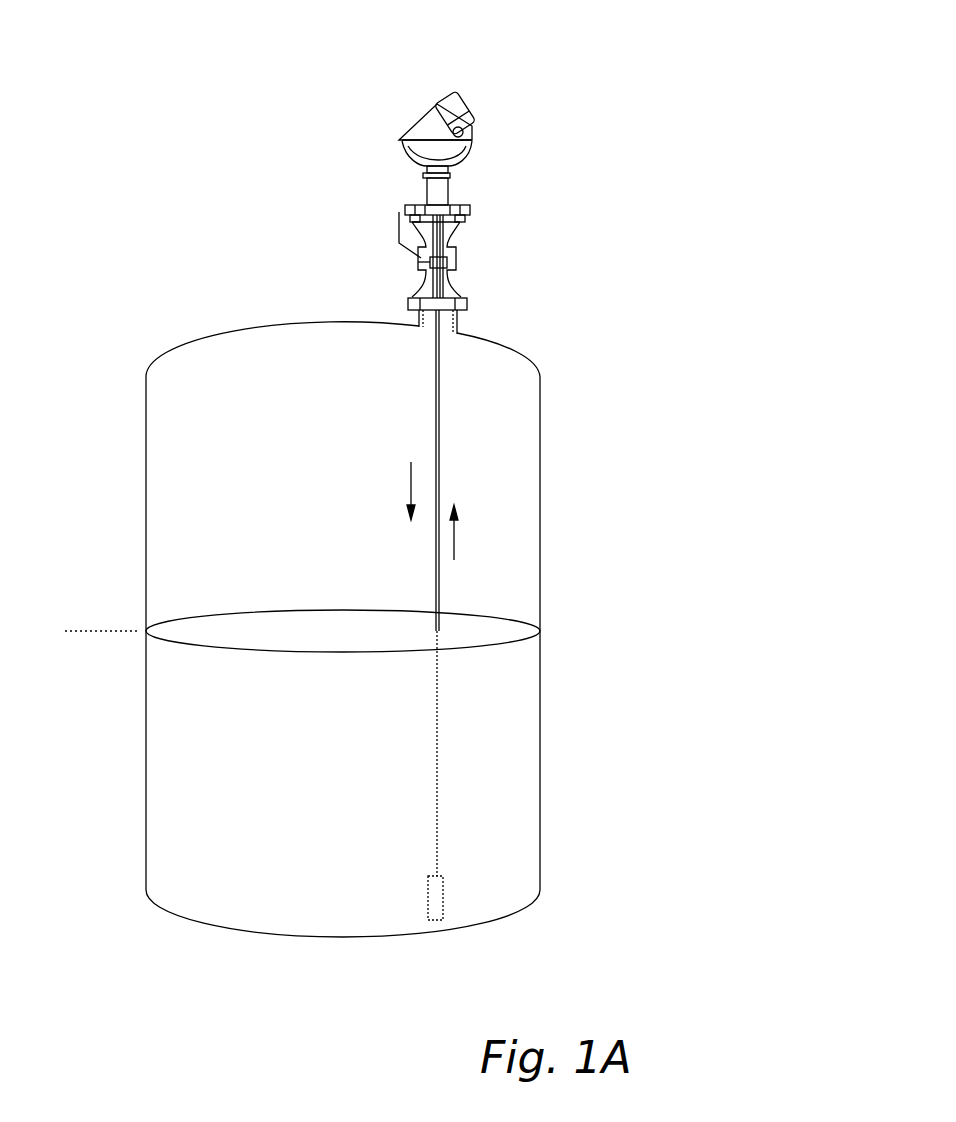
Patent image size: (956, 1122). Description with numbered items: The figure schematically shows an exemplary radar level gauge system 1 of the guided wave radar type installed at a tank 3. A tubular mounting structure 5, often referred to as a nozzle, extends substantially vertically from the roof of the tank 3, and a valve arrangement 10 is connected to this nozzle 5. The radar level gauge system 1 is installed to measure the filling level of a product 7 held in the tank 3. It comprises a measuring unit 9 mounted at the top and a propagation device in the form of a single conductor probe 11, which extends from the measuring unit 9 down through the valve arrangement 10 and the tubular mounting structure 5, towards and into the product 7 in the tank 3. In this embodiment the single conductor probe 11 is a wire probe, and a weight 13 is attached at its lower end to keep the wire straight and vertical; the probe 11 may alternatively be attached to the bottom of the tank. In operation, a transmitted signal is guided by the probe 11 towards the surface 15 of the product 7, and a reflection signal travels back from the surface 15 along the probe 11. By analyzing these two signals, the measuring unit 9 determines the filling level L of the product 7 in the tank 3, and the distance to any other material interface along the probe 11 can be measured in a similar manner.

The radar level gauge system 1 is at (561, 168).
The tank 3 is at (145, 418).
The tubular mounting structure 5 is at (458, 323).
The product 7 is at (291, 803).
The measuring unit 9 is at (428, 102).
The valve arrangement 10 is at (376, 247).
The single conductor probe 11 is at (438, 468).
The weight 13 is at (437, 900).
The surface 15 is at (288, 626).
The filling level L is at (91, 633).